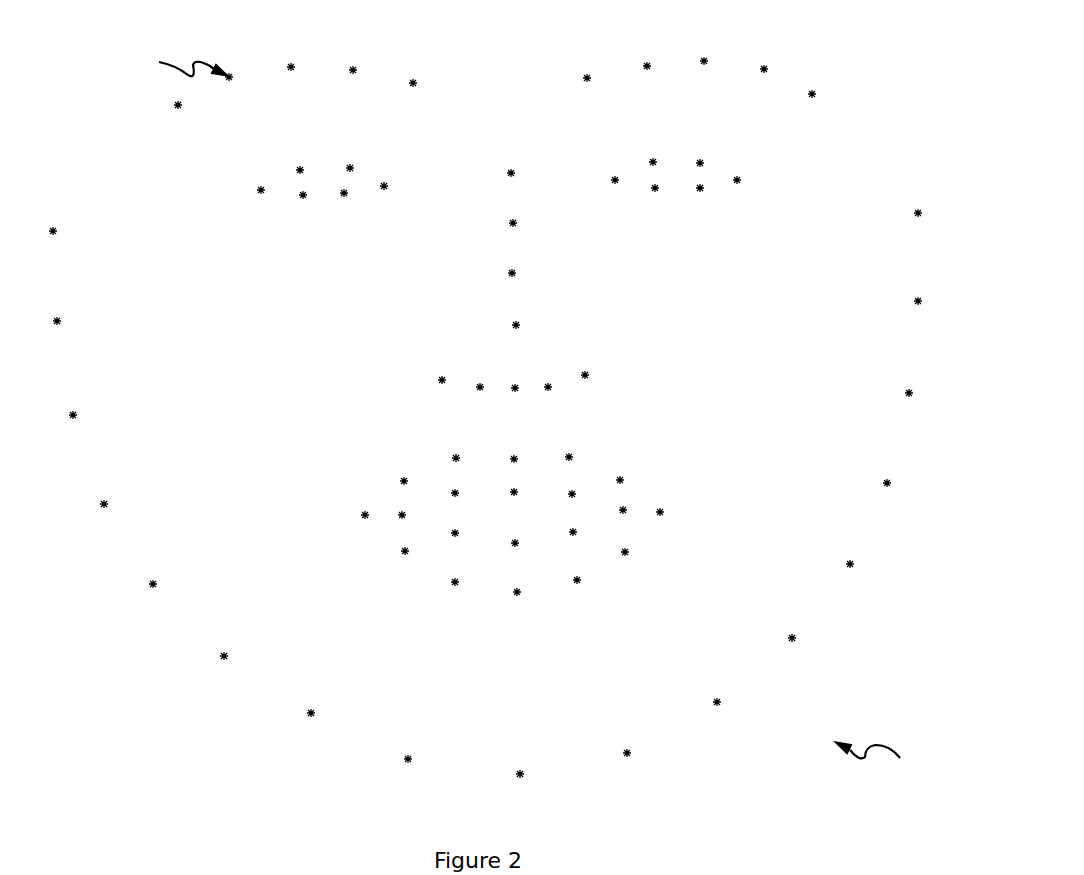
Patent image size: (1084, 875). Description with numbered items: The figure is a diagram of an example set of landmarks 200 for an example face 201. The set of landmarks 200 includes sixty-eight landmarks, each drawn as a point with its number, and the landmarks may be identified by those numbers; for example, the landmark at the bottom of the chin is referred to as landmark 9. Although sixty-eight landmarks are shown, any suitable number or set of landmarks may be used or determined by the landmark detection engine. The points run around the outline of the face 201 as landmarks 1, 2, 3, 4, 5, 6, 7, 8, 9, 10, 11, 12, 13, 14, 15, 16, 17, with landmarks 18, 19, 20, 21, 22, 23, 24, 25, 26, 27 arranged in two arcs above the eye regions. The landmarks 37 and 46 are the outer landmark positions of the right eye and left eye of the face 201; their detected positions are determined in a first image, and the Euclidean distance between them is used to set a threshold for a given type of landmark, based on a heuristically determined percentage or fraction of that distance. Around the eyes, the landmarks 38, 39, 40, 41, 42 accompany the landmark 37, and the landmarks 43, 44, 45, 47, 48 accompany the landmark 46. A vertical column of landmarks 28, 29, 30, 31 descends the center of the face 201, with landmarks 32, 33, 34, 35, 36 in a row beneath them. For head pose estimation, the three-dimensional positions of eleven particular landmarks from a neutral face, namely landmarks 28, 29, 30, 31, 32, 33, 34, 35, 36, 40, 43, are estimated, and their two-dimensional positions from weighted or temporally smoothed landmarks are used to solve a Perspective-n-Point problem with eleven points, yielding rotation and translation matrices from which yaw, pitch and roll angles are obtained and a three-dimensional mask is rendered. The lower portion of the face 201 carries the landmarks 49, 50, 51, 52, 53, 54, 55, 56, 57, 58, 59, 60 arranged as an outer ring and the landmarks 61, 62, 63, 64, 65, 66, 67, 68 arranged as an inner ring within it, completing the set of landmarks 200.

The landmark LM1 1 is at (61, 231).
The landmark LM2 2 is at (65, 321).
The landmark LM3 3 is at (81, 415).
The landmark LM4 4 is at (112, 504).
The landmark LM5 5 is at (161, 584).
The landmark LM6 6 is at (232, 656).
The landmark LM7 7 is at (319, 713).
The landmark LM8 8 is at (416, 759).
The landmark LM9 9 is at (528, 774).
The landmark LM10 10 is at (641, 753).
The landmark LM11 11 is at (731, 702).
The landmark LM12 12 is at (806, 638).
The landmark LM13 13 is at (864, 564).
The landmark LM14 14 is at (901, 483).
The landmark LM15 15 is at (923, 393).
The landmark LM16 16 is at (932, 301).
The landmark LM17 17 is at (932, 213).
The landmark LM18 18 is at (192, 105).
The landmark LM19 19 is at (243, 77).
The landmark LM20 20 is at (305, 67).
The landmark LM21 21 is at (367, 70).
The landmark LM22 22 is at (427, 83).
The landmark LM23 23 is at (601, 78).
The landmark LM24 24 is at (661, 66).
The landmark LM25 25 is at (718, 61).
The landmark LM26 26 is at (778, 69).
The landmark LM27 27 is at (826, 94).
The landmark LM28 28 is at (525, 173).
The landmark LM29 29 is at (527, 223).
The landmark LM30 30 is at (526, 273).
The landmark LM31 31 is at (530, 325).
The landmark LM32 32 is at (456, 380).
The landmark LM33 33 is at (494, 387).
The landmark LM34 34 is at (529, 388).
The landmark LM35 35 is at (562, 387).
The landmark LM36 36 is at (599, 375).
The landmark LM37 37 is at (275, 190).
The landmark LM38 38 is at (314, 170).
The landmark LM39 39 is at (364, 168).
The landmark LM40 40 is at (398, 186).
The landmark LM41 41 is at (358, 193).
The landmark LM42 42 is at (317, 195).
The landmark LM43 43 is at (629, 180).
The landmark LM44 44 is at (667, 162).
The landmark LM45 45 is at (714, 163).
The landmark LM46 46 is at (751, 180).
The landmark LM47 47 is at (714, 188).
The landmark LM48 48 is at (669, 188).
The landmark LM49 49 is at (379, 515).
The landmark LM50 50 is at (418, 481).
The landmark LM51 51 is at (470, 458).
The landmark LM52 52 is at (528, 459).
The landmark LM53 53 is at (583, 457).
The landmark LM54 54 is at (634, 480).
The landmark LM55 55 is at (674, 512).
The landmark LM56 56 is at (639, 552).
The landmark LM57 57 is at (591, 580).
The landmark LM58 58 is at (531, 592).
The landmark LM59 59 is at (469, 582).
The landmark LM60 60 is at (419, 551).
The landmark LM61 61 is at (416, 515).
The landmark LM62 62 is at (469, 493).
The landmark LM63 63 is at (528, 492).
The landmark LM64 64 is at (586, 494).
The landmark LM65 65 is at (637, 510).
The landmark LM66 66 is at (587, 532).
The landmark LM67 67 is at (529, 543).
The landmark LM68 68 is at (469, 533).
The set of landmarks 200 is at (178, 55).
The face 201 is at (883, 765).